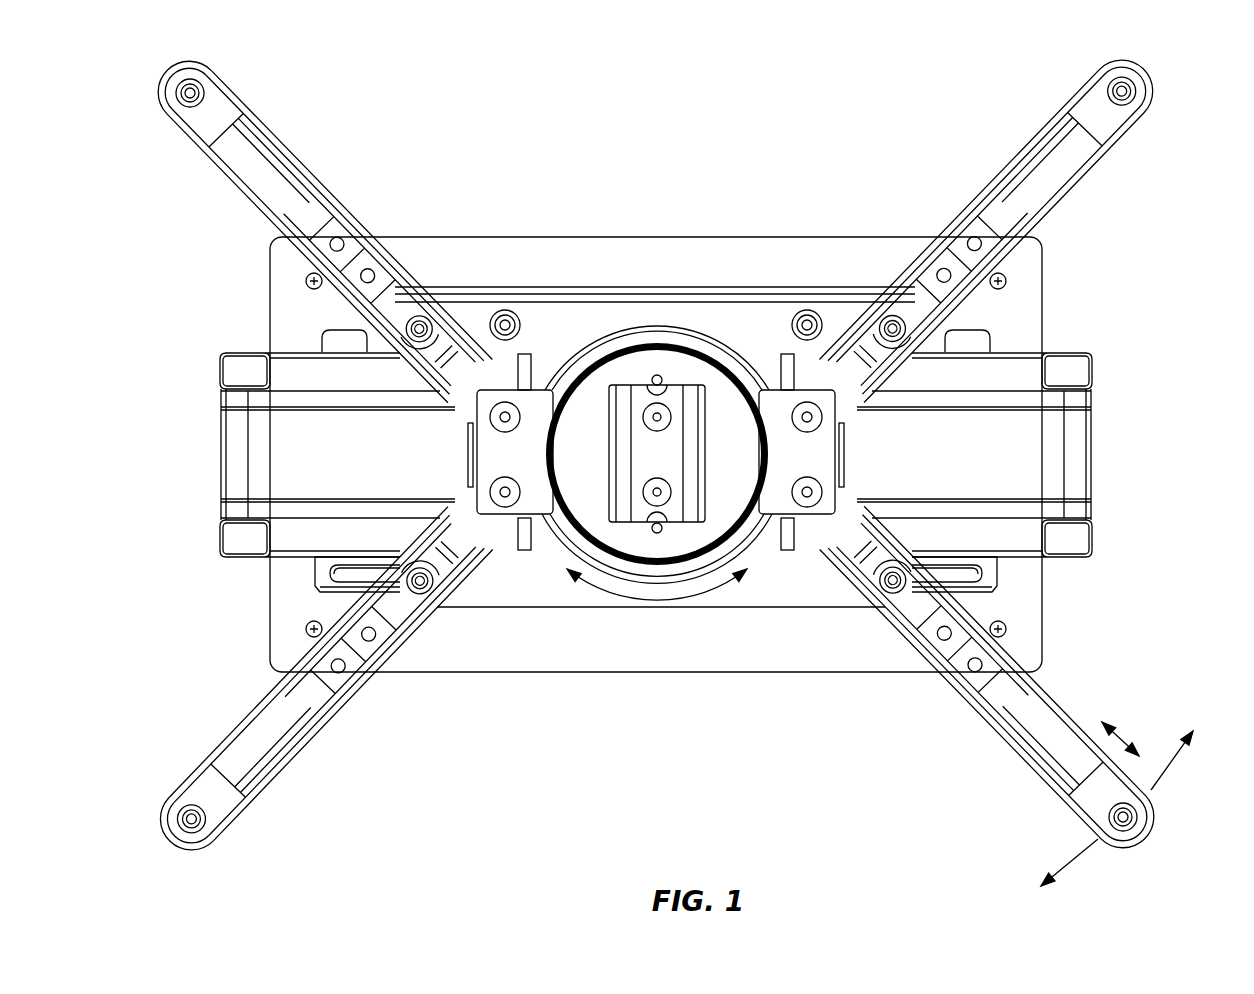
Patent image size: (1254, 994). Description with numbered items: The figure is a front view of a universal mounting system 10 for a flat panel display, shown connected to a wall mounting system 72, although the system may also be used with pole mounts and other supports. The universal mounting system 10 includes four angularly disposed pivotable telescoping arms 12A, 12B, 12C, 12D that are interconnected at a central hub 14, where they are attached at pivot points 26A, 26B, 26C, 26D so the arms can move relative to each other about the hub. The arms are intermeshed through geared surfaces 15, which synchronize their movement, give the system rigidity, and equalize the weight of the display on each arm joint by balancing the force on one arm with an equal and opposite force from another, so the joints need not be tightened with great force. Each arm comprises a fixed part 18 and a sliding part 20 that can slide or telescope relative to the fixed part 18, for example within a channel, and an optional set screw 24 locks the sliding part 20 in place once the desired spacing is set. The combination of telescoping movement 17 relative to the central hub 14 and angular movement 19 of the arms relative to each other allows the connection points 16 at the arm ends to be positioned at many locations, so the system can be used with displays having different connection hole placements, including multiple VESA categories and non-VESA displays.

The universal mounting system 10 is at (668, 228).
The pivotable telescoping arm 12A is at (303, 219).
The pivotable telescoping arm 12B is at (303, 690).
The pivotable telescoping arm 12C is at (1007, 223).
The pivotable telescoping arm 12D is at (1008, 684).
The central hub 14 is at (610, 331).
The geared surfaces 15 is at (534, 528).
The connection points 16 is at (199, 87).
The telescoping movement 17 is at (1122, 745).
The fixed part 18 is at (313, 166).
The angular movement 19 is at (1165, 776).
The sliding part 20 is at (195, 141).
The set screw 24 is at (975, 668).
The pivot point 26A is at (508, 414).
The pivot point 26B is at (505, 495).
The pivot point 26C is at (807, 414).
The pivot point 26D is at (808, 495).
The wall mounting system 72 is at (1105, 372).